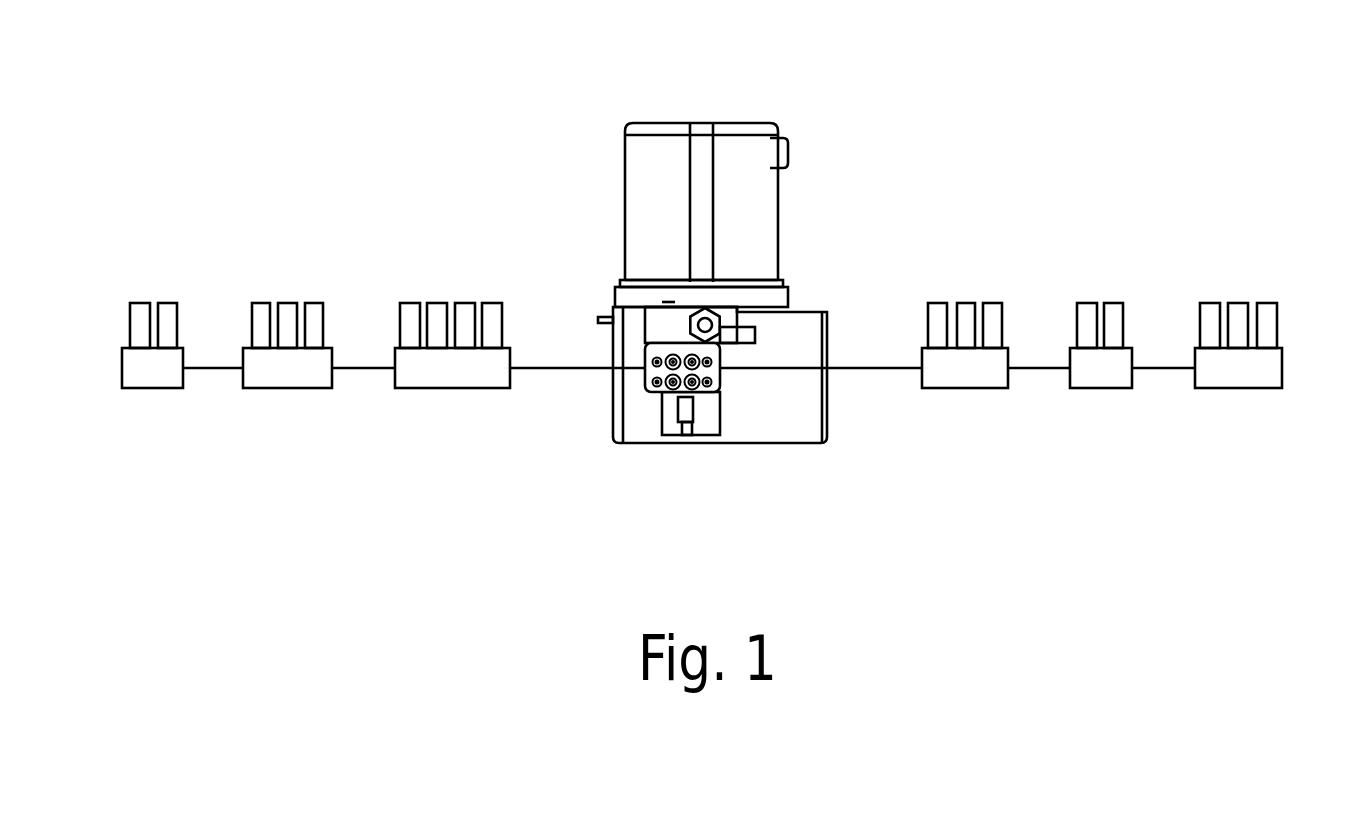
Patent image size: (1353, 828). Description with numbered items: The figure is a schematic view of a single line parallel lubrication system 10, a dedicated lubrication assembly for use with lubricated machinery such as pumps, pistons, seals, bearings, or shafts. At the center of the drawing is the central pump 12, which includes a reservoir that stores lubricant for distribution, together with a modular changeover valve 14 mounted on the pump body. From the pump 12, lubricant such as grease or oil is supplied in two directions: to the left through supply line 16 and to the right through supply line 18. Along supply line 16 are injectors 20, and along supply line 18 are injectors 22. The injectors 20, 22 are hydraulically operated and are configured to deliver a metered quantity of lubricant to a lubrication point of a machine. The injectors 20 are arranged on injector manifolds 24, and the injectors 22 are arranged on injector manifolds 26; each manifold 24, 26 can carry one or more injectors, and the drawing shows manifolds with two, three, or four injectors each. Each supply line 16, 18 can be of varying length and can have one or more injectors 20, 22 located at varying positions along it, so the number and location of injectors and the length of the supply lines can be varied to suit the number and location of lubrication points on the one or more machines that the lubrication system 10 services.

The single line parallel lubrication system 10 is at (975, 137).
The central pump 12 is at (600, 243).
The modular changeover valve 14 is at (735, 360).
The supply line 16 is at (348, 260).
The supply line 18 is at (1105, 248).
The injectors 20 is at (490, 303).
The injectors 22 is at (993, 303).
The injector manifold 24 is at (316, 345).
The injector manifold 26 is at (1102, 345).